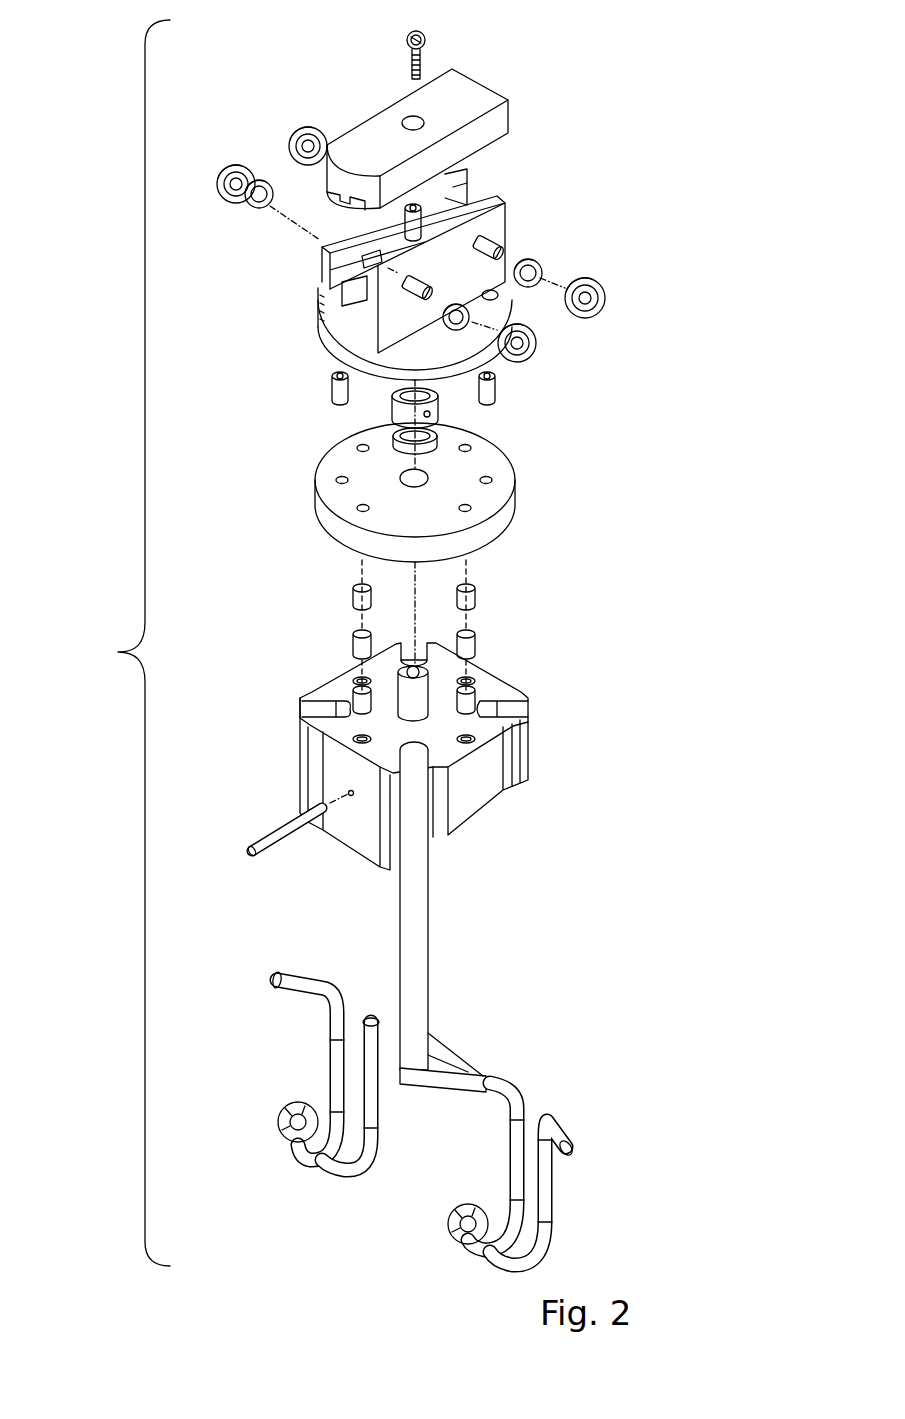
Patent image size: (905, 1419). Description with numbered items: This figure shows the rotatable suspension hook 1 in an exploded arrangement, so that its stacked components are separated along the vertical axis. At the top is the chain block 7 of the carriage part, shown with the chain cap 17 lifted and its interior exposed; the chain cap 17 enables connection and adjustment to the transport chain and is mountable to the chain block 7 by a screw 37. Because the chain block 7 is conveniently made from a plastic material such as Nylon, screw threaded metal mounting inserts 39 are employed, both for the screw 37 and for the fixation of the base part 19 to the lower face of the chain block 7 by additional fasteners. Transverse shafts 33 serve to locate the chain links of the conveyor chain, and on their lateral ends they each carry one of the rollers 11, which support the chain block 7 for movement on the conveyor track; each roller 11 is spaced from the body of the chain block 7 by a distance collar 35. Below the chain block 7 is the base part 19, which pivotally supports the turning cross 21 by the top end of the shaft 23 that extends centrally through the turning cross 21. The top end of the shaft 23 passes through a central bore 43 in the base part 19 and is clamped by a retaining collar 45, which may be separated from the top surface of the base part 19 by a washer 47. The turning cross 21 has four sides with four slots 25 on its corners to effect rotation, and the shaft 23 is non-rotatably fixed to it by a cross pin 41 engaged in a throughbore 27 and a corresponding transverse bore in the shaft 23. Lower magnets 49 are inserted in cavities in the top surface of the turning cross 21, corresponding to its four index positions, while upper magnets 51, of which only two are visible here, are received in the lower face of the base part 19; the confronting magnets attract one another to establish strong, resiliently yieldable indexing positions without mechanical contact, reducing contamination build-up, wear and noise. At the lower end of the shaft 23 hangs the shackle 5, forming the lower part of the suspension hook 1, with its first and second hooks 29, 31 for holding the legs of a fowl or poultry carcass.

The suspension hook 1 is at (94, 643).
The shackle 5 is at (524, 1080).
The chain block 7 is at (335, 323).
The rollers 11 is at (306, 126).
The chain cap 17 is at (472, 86).
The base part 19 is at (497, 520).
The turning cross 21 is at (340, 756).
The shaft 23 is at (425, 918).
The slots 25 is at (318, 710).
The throughbore 27 is at (347, 793).
The first hook 29 is at (286, 1132).
The second hook 31 is at (452, 1232).
The transverse shafts 33 is at (492, 240).
The distance collars 35 is at (249, 202).
The screw 37 is at (425, 38).
The mounting insert 39 is at (430, 212).
The cross pin 41 is at (265, 836).
The central bore 43 is at (420, 478).
The retaining collar 45 is at (440, 408).
The washer 47 is at (440, 438).
The lower magnets 49 is at (354, 692).
The upper magnets 51 is at (352, 590).